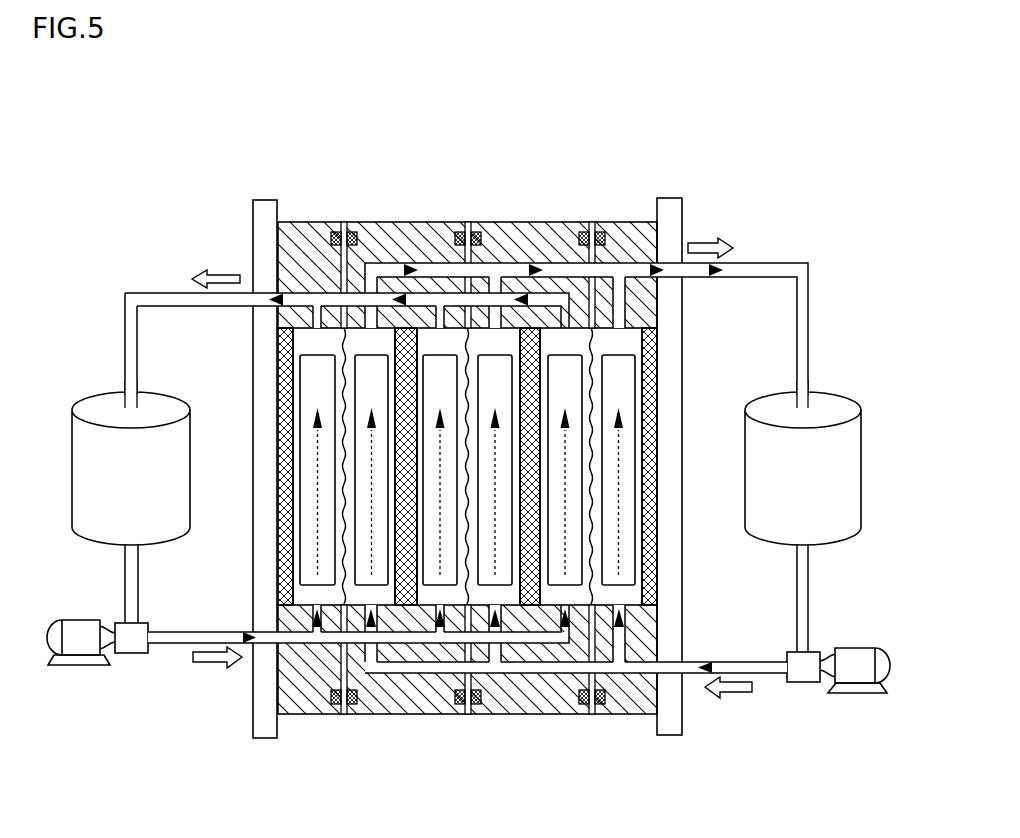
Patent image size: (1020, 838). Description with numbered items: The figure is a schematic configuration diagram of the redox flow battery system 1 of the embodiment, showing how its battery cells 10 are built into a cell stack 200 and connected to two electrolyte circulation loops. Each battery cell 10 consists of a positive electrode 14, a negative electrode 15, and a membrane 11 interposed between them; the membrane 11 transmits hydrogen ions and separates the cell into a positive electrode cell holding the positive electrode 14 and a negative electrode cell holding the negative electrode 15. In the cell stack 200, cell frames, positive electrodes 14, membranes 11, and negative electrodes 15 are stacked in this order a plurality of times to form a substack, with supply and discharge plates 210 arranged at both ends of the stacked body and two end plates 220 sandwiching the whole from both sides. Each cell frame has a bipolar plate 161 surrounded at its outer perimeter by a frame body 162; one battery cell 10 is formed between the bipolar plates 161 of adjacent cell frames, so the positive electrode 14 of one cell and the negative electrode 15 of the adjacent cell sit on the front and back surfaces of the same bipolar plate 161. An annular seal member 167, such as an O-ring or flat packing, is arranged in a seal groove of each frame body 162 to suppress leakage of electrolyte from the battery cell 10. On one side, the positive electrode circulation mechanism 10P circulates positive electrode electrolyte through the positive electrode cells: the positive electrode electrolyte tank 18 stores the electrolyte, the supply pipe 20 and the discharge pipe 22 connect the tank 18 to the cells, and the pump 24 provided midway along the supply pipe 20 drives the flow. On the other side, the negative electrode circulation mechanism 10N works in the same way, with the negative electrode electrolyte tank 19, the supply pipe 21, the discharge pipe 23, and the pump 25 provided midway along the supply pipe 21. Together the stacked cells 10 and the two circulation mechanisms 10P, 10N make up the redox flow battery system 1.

The redox flow battery system 1 is at (126, 112).
The cell stack 200 is at (669, 167).
The supply and discharge plate 210 is at (262, 727).
The end plate 220 is at (682, 730).
The frame body 162 is at (302, 222).
The seal member 167 is at (347, 222).
The bipolar plate 161 is at (387, 343).
The battery cell 10 is at (288, 716).
The membrane 11 is at (352, 716).
The positive electrode 14 is at (362, 546).
The negative electrode 15 is at (322, 582).
The positive electrode circulation mechanism 10P is at (109, 682).
The negative electrode circulation mechanism 10N is at (806, 699).
The positive electrode electrolyte tank 18 is at (88, 395).
The negative electrode electrolyte tank 19 is at (846, 393).
The supply pipe 20 is at (182, 646).
The supply pipe 21 is at (757, 676).
The discharge pipe 22 is at (157, 291).
The discharge pipe 23 is at (776, 262).
The pump 24 is at (78, 620).
The pump 25 is at (858, 648).